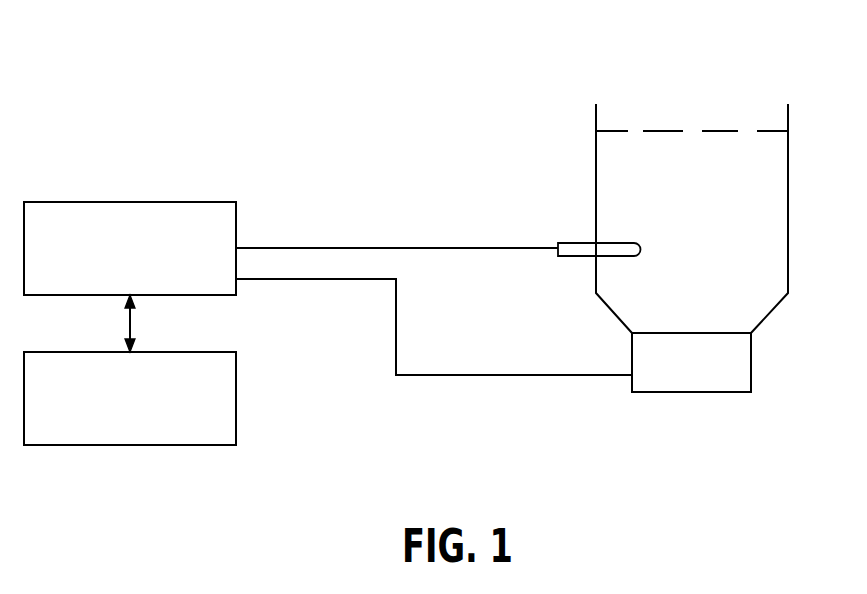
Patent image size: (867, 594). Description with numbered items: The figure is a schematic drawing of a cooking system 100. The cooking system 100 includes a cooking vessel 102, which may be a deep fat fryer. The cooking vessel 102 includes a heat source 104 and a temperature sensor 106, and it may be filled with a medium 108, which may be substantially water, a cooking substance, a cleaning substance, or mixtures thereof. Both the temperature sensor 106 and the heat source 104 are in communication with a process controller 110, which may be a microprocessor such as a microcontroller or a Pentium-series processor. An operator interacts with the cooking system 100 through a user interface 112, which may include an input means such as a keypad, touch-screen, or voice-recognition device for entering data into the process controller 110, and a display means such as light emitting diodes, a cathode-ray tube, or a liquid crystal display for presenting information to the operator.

The cooking system 100 is at (510, 48).
The cooking vessel 102 is at (788, 159).
The heat source 104 is at (751, 362).
The temperature sensor 106 is at (576, 243).
The medium 108 is at (770, 213).
The process controller 110 is at (177, 202).
The user interface 112 is at (236, 399).